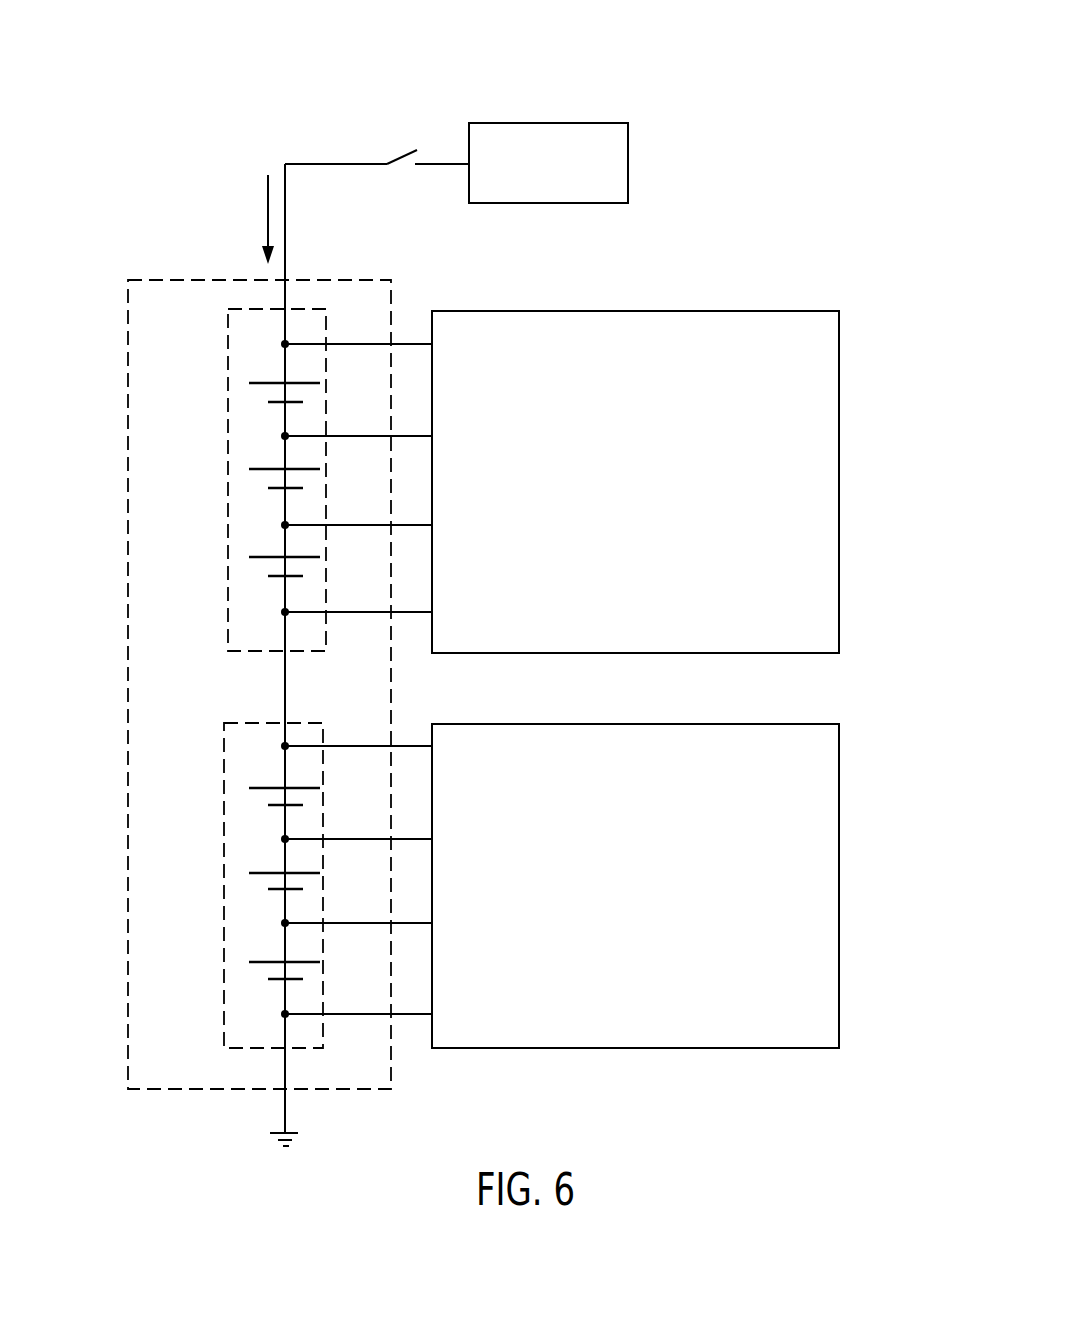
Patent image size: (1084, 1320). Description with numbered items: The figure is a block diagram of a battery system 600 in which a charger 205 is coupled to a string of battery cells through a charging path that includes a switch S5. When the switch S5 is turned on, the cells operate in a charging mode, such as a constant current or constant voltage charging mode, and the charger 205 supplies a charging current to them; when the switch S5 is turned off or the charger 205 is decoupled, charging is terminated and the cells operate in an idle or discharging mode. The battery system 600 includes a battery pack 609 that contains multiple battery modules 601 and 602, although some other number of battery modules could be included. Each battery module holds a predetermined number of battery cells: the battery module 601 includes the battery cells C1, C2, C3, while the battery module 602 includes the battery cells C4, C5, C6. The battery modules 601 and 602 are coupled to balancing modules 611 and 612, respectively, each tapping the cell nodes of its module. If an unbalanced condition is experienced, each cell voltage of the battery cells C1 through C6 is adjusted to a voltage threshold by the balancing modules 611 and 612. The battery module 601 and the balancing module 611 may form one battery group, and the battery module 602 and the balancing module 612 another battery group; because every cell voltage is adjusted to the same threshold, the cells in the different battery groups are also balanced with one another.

The battery system 600 is at (256, 124).
The charger 205 is at (567, 192).
The switch S5 is at (405, 154).
The battery pack 609 is at (137, 280).
The battery module 601 is at (228, 440).
The battery module 602 is at (224, 864).
The battery cell C1 is at (277, 382).
The battery cell C2 is at (277, 468).
The battery cell C3 is at (277, 556).
The battery cell C4 is at (277, 786).
The battery cell C5 is at (277, 871).
The battery cell C6 is at (277, 960).
The balancing module 611 is at (840, 477).
The balancing module 612 is at (840, 880).